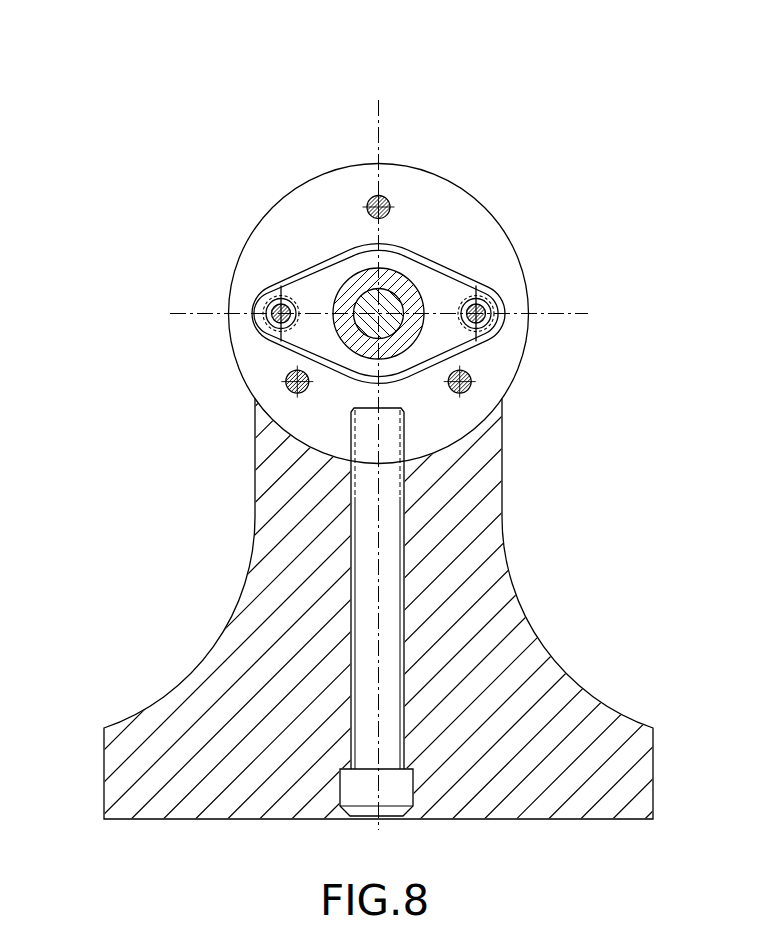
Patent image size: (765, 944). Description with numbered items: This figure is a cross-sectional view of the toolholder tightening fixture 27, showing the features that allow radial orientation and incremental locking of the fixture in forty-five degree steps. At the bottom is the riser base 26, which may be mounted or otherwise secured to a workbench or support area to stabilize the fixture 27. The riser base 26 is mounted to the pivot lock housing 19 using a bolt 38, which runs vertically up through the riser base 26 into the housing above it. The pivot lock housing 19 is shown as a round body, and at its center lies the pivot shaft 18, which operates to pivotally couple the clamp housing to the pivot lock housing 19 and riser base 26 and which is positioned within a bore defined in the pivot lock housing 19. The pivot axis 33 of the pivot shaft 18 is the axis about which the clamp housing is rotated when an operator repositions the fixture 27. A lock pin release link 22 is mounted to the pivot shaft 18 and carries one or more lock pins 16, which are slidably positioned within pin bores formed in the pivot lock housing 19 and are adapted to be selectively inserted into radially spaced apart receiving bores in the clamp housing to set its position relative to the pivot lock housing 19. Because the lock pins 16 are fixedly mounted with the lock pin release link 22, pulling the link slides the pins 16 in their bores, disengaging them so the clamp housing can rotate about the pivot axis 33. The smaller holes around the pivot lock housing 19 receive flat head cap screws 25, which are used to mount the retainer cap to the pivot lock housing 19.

The toolholder tightening fixture 27 is at (128, 83).
The pivot lock housing 19 is at (322, 192).
The pivot shaft 18 is at (402, 278).
The pivot axis 33 is at (388, 311).
The lock pin release link 22 is at (300, 283).
The lock pin 16 is at (270, 323).
The flat head cap screw 25 is at (470, 389).
The riser base 26 is at (187, 683).
The bolt 38 is at (367, 785).